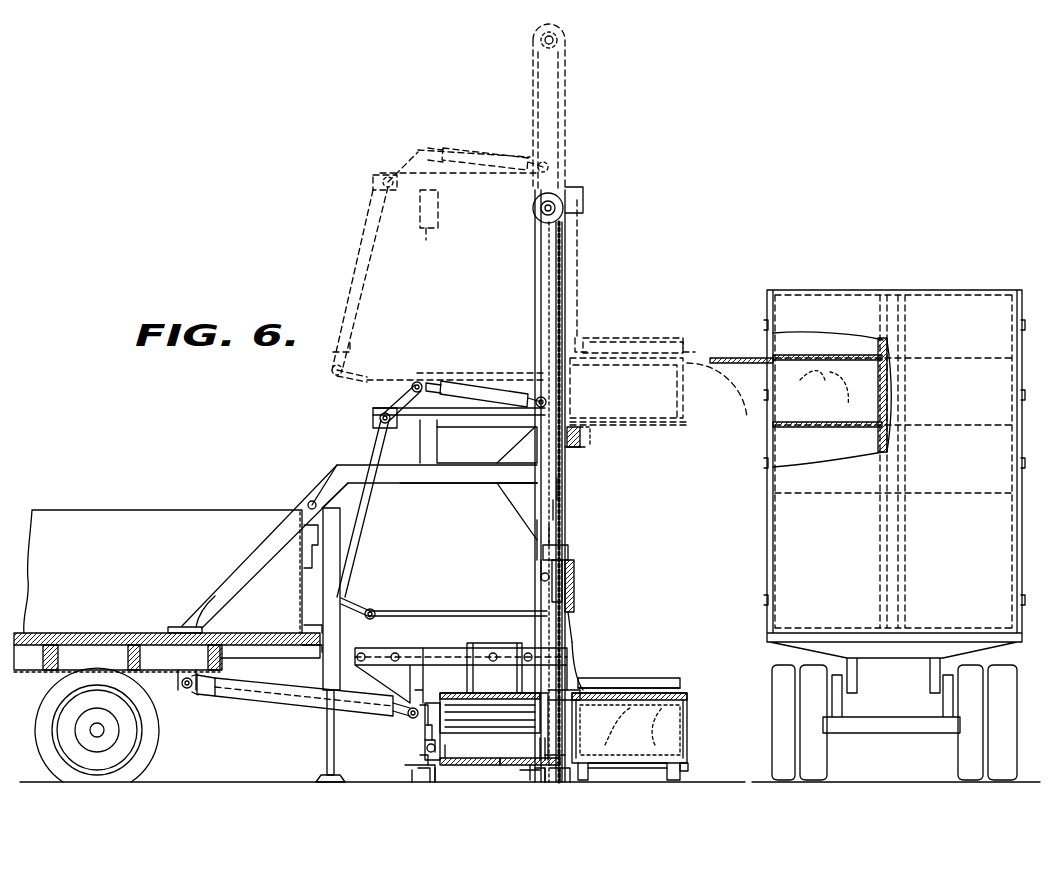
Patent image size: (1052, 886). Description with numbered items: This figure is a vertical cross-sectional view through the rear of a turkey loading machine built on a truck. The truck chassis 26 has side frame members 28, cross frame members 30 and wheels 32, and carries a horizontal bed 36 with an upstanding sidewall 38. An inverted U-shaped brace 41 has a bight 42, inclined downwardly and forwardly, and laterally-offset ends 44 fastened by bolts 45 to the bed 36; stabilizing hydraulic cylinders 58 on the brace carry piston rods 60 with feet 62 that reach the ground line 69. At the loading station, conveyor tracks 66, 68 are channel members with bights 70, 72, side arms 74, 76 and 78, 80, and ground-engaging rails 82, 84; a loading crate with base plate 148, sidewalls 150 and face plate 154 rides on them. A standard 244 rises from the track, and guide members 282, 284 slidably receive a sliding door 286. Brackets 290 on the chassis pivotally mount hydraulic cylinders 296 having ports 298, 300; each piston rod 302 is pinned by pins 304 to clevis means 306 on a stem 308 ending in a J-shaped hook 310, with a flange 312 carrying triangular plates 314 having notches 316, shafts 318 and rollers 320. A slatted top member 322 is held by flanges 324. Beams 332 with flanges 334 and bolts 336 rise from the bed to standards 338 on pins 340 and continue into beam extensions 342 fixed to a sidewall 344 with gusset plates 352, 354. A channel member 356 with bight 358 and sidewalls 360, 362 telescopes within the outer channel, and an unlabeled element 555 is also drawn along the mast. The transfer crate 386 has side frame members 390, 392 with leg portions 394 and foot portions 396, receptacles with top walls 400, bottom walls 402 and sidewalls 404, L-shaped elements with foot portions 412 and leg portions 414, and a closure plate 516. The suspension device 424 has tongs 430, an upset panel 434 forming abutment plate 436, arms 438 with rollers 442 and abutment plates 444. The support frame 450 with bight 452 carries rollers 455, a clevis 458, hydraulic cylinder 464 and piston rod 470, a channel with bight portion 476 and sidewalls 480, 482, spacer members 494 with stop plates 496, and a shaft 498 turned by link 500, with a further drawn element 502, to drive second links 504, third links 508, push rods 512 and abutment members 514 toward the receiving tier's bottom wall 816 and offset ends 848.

The chassis 26 is at (42, 670).
The side frame members 28 is at (112, 645).
The cross frame members 30 is at (128, 656).
The wheels 32 is at (48, 760).
The bed 36 is at (44, 633).
The sidewall 38 is at (252, 510).
The brace 41 is at (300, 578).
The bight 42 is at (306, 530).
The laterally-offset ends 44 is at (304, 628).
The bolts 45 is at (310, 648).
The hydraulic cylinders 58 is at (340, 542).
The piston rod 60 is at (327, 740).
The foot 62 is at (320, 778).
The ground line 69 is at (706, 782).
The standard 244 is at (195, 696).
The brackets 290 is at (184, 689).
The hydraulic cylinders 296 is at (268, 706).
The port 298 is at (222, 700).
The port 300 is at (392, 710).
The piston rod 302 is at (408, 717).
The pins 304 is at (418, 722).
The clevis means 306 is at (426, 735).
The stem 308 is at (426, 748).
The J-shaped hook 310 is at (442, 745).
The flange 312 is at (430, 703).
The triangular plates 314 is at (461, 675).
The notch 316 is at (425, 690).
The shafts 318 is at (366, 652).
The rollers 320 is at (397, 652).
The slatted top member 322 is at (490, 692).
The flanges 324 is at (490, 650).
The beams 332 is at (258, 545).
The flanges 334 is at (178, 612).
The bolts 336 is at (204, 600).
The standards 338 is at (322, 497).
The pins 340 is at (306, 503).
The beam extensions 342 is at (480, 484).
The sidewall 344 is at (534, 545).
The top gusset plate 352 is at (522, 440).
The bottom gusset plate 354 is at (518, 505).
The channel member 356 is at (560, 498).
The bight 358 is at (556, 518).
The sidewall 360 is at (538, 568).
The sidewall 362 is at (552, 543).
The transfer crate 386 is at (696, 693).
The side frame member 390 is at (638, 770).
The side frame member 392 is at (695, 777).
The leg portion 394 is at (588, 778).
The foot portion 396 is at (596, 748).
The top wall 400 is at (664, 690).
The bottom wall 402 is at (636, 768).
The sidewall 404 is at (690, 702).
The foot portions 412 is at (584, 328).
The leg portion 414 is at (596, 338).
The suspension device 424 is at (647, 662).
The tongs 430 is at (650, 685).
The upset panel 434 is at (578, 645).
The abutment plate 436 is at (574, 624).
The arms 438 is at (562, 575).
The rollers 442 is at (540, 582).
The abutment plate 444 is at (566, 553).
The support frame 450 is at (360, 416).
The bight 452 is at (532, 412).
The rollers 455 is at (524, 466).
The clevis 458 is at (444, 424).
The hydraulic cylinder 464 is at (486, 380).
The piston rod 470 is at (435, 382).
The bight portion 476 is at (600, 440).
The sidewall 480 is at (582, 434).
The sidewall 482 is at (585, 448).
The spacer members 494 is at (437, 450).
The stop plates 496 is at (426, 240).
The shaft 498 is at (380, 420).
The link 500 is at (410, 388).
The link 502 is at (412, 395).
The second links 504 is at (366, 497).
The third links 508 is at (362, 600).
The push rod 512 is at (447, 610).
The abutment members 514 is at (576, 600).
The closure plate 516 is at (690, 730).
The mast 555 is at (534, 280).
The bottom wall 816 is at (828, 628).
The offset ends 848 is at (772, 490).
The guide member 284 is at (560, 690).
The sliding door 286 is at (540, 748).
The guide member 282 is at (545, 757).
The face plate 154 is at (470, 752).
The sidewalls 150 is at (470, 775).
The base plate 148 is at (500, 765).
The rail 84 is at (528, 775).
The bight 70 is at (420, 756).
The conveyor track 66 is at (396, 776).
The side arm 74 is at (414, 780).
The side arm 76 is at (422, 785).
The rail 82 is at (436, 785).
The side arm 78 is at (538, 780).
The conveyor track 68 is at (546, 785).
The bight 72 is at (556, 786).
The side arm 80 is at (566, 784).